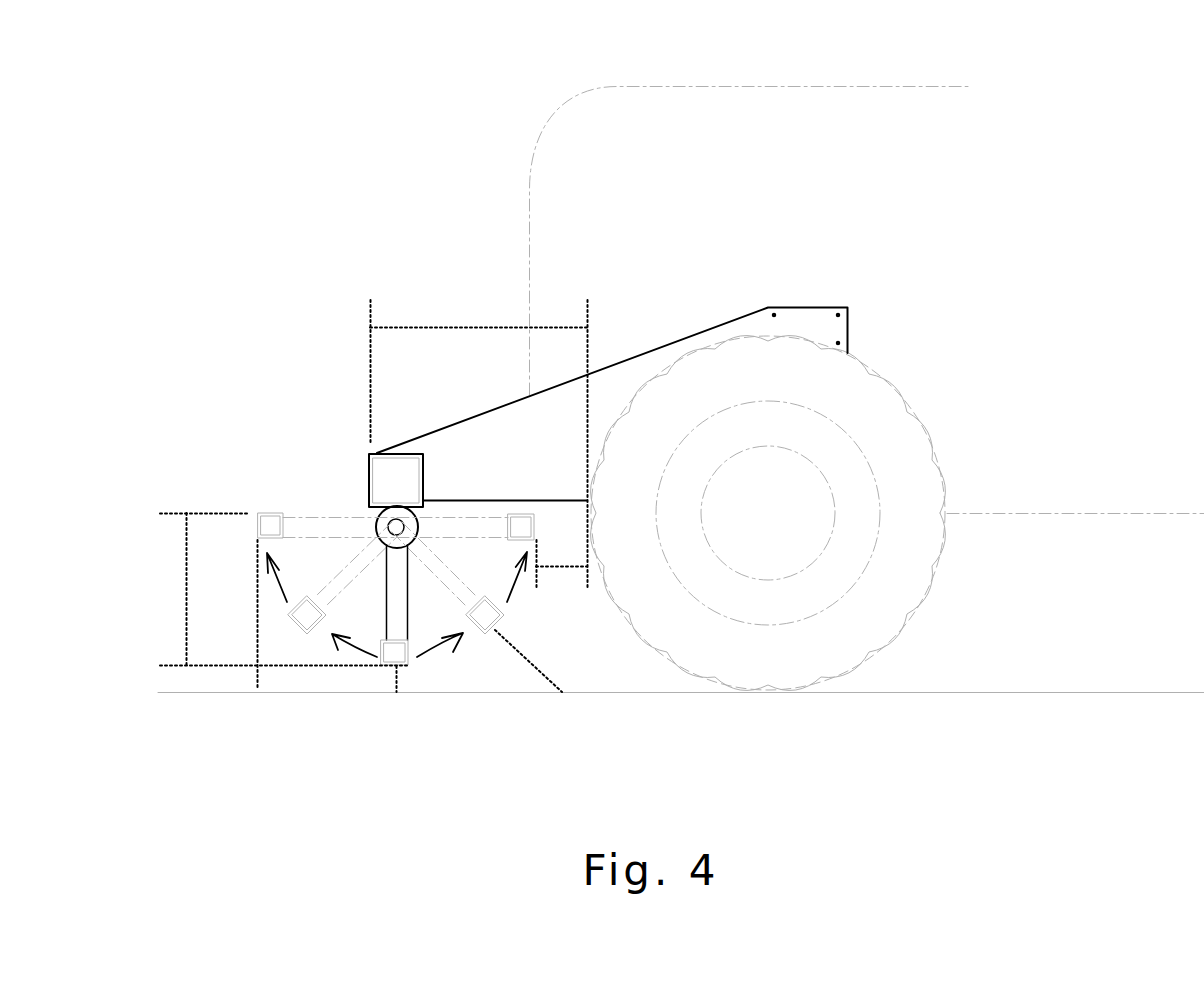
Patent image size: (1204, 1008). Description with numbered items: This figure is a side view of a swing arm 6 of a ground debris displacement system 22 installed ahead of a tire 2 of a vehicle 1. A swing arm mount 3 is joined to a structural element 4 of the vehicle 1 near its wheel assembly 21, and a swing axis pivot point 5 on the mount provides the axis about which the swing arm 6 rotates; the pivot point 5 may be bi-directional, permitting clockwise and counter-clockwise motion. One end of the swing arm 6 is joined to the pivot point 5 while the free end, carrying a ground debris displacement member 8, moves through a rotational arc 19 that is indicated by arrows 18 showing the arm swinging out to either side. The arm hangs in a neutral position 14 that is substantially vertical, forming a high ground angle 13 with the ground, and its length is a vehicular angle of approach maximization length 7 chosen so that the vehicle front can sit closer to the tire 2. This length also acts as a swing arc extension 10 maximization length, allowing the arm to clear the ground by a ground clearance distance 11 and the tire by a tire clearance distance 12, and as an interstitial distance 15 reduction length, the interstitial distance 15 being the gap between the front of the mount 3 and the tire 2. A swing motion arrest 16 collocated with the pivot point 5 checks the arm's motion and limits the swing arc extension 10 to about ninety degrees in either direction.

The vehicle 1 is at (987, 420).
The tire 2 is at (925, 618).
The swing arm mount 3 is at (370, 475).
The structural element 4 is at (812, 320).
The swing axis pivot point 5 is at (396, 527).
The swing arm 6 is at (407, 590).
The vehicular angle of approach maximization length 7 is at (187, 580).
The ground debris displacement member 8 is at (403, 668).
The swing arc extension 10 is at (258, 648).
The ground clearance distance 11 is at (257, 677).
The tire clearance distance 12 is at (560, 567).
The ground angle 13 is at (390, 692).
The neutral position 14 is at (399, 680).
The interstitial distance 15 is at (457, 327).
The swing motion arrest 16 is at (377, 513).
The pivot movement arrows 18 is at (277, 582).
The rotational arc 19 is at (352, 652).
The wheel assembly 21 is at (893, 357).
The ground debris displacement system 22 is at (188, 494).